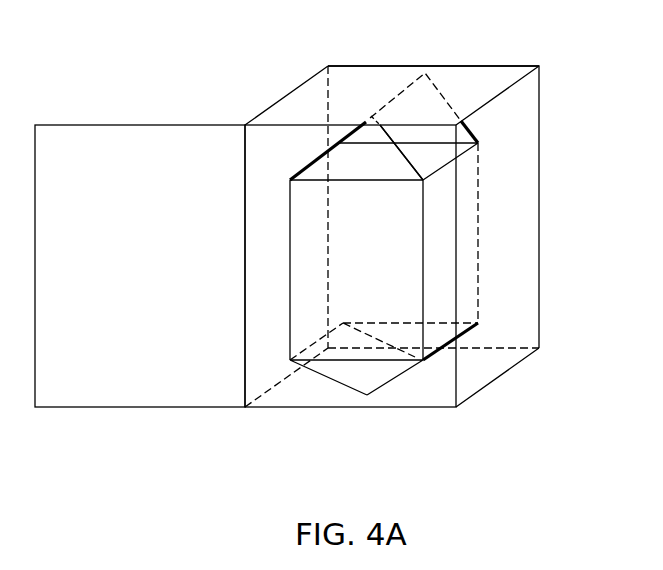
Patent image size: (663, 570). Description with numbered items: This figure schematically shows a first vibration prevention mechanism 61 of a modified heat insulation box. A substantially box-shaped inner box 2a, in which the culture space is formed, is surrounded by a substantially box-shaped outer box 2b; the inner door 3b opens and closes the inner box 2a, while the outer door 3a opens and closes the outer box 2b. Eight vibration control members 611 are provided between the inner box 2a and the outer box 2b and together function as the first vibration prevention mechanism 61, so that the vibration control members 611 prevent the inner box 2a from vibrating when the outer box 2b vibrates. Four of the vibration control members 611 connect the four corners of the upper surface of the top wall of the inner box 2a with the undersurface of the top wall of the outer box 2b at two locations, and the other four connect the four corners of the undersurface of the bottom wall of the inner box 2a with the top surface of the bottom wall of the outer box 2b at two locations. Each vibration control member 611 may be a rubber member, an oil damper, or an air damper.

The outer door 3a is at (145, 125).
The inner door 3b is at (310, 218).
The inner box 2a is at (423, 157).
The outer box 2b is at (490, 67).
The first vibration prevention mechanism 61 is at (288, 154).
The vibration control member 611 is at (318, 158).